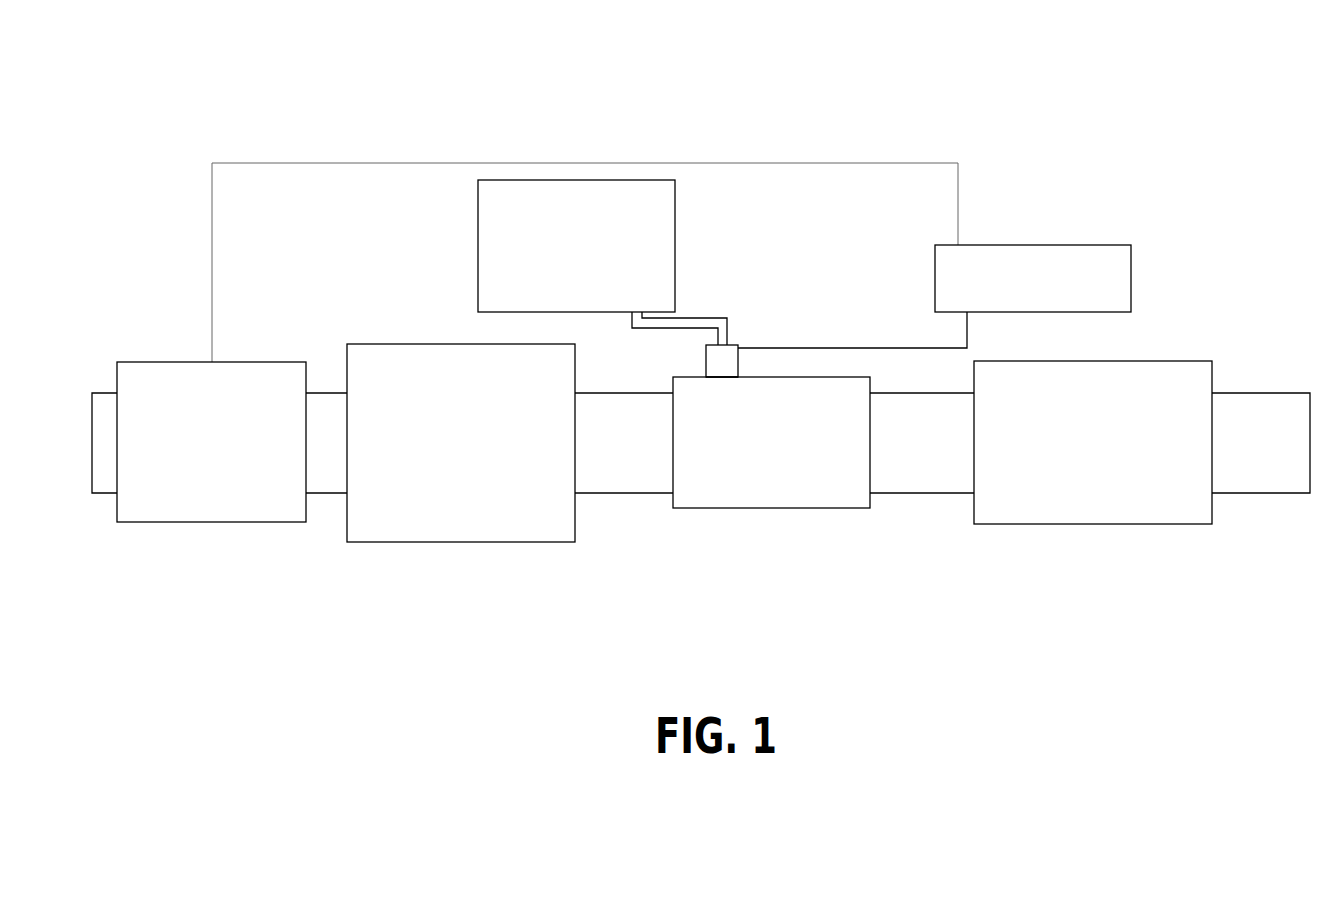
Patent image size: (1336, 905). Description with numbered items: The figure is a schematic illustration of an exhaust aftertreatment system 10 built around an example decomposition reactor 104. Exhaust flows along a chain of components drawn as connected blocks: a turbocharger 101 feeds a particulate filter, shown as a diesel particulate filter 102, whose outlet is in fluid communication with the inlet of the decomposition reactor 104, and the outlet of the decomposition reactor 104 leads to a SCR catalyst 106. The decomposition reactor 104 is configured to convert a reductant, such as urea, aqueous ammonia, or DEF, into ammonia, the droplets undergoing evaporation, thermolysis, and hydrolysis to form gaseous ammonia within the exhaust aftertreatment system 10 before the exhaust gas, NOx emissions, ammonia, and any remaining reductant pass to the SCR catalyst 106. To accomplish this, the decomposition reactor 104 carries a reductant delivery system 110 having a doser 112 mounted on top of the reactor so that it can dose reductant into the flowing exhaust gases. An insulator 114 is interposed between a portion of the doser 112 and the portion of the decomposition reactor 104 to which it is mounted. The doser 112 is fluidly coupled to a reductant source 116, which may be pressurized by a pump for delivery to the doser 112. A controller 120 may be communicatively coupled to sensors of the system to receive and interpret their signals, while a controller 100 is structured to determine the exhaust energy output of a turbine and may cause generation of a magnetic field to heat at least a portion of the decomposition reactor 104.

The exhaust aftertreatment system 10 is at (446, 122).
The controller 100 is at (1172, 302).
The turbocharger 101 is at (233, 522).
The diesel particulate filter 102 is at (485, 542).
The decomposition reactor 104 is at (862, 377).
The SCR catalyst 106 is at (1103, 524).
The reductant delivery system 110 is at (857, 262).
The doser 112 is at (742, 352).
The insulator 114 is at (706, 370).
The reductant source 116 is at (633, 180).
The controller 120 is at (1018, 245).